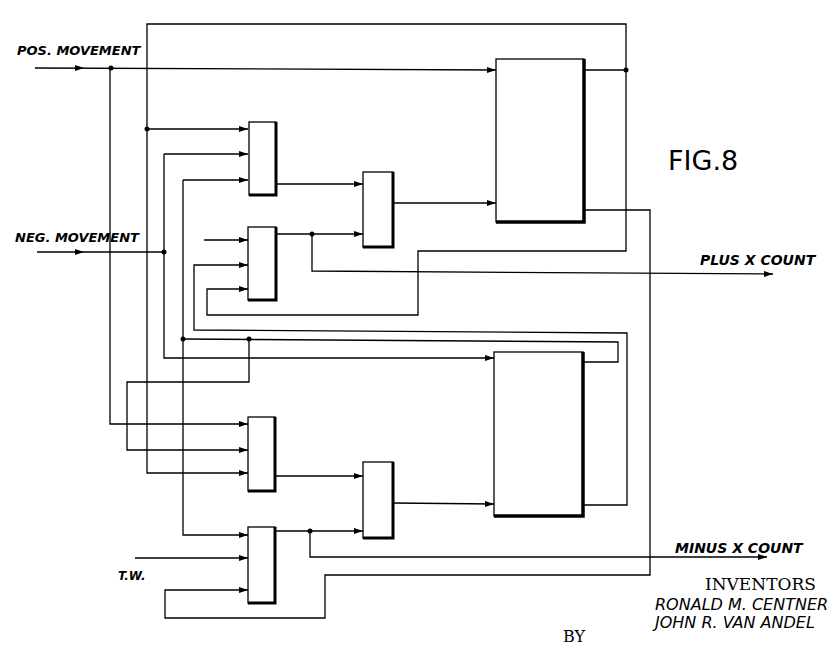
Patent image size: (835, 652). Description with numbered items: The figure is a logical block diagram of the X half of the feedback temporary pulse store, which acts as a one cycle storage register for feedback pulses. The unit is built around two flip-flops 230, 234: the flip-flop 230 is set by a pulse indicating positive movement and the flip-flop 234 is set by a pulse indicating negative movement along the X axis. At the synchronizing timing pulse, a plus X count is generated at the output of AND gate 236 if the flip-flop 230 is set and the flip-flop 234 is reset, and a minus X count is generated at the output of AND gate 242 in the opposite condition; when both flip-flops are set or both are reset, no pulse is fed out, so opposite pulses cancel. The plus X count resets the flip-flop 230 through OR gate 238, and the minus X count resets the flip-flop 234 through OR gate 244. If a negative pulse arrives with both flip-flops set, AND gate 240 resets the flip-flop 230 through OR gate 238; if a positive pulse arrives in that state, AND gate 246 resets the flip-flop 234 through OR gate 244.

The flip-flop 230 is at (520, 112).
The flip-flop 234 is at (518, 408).
The AND gate 236 is at (277, 236).
The OR gate 238 is at (404, 205).
The AND gate 240 is at (277, 136).
The AND gate 242 is at (276, 592).
The OR gate 244 is at (393, 530).
The AND gate 246 is at (276, 426).